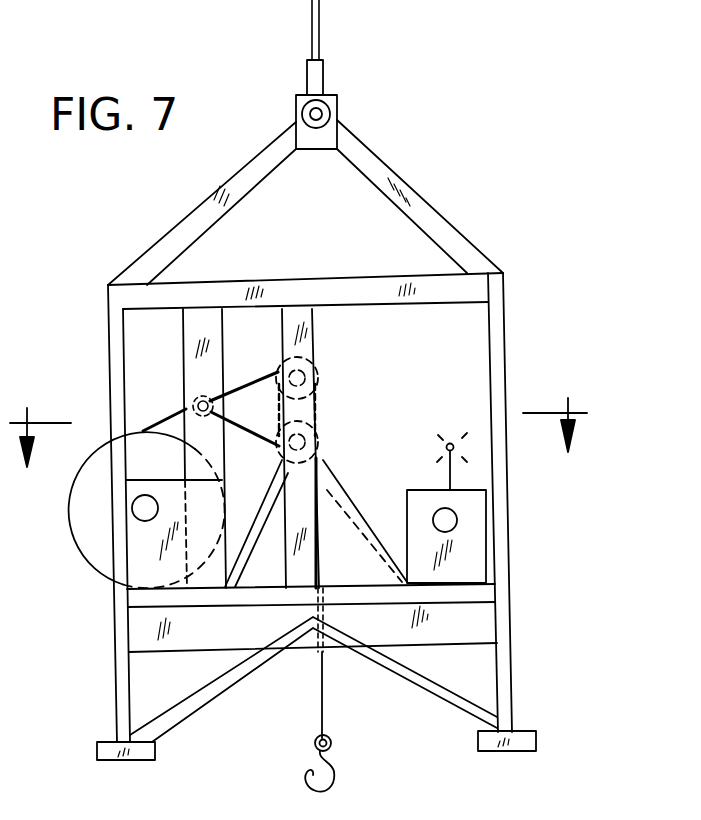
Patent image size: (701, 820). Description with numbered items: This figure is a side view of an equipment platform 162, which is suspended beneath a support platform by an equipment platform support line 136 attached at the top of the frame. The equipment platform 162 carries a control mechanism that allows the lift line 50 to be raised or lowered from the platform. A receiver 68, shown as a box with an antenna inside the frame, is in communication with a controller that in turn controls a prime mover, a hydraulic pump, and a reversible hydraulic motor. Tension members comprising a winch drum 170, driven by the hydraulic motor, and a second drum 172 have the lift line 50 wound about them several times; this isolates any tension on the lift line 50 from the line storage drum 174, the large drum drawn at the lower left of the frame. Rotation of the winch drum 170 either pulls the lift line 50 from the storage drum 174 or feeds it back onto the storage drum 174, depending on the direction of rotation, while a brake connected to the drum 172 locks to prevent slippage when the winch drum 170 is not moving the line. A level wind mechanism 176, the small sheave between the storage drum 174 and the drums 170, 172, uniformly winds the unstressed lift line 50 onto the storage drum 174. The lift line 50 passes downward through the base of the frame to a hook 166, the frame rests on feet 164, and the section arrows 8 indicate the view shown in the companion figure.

The equipment platform support line 136 is at (320, 2).
The equipment platform 162 is at (430, 204).
The level wind mechanism 176 is at (200, 398).
The drum 172 is at (320, 372).
The winch drum 170 is at (322, 440).
The receiver 68 is at (477, 522).
The line storage drum 174 is at (68, 507).
The base foot 164 is at (525, 751).
The lift line 50 is at (318, 685).
The hook 166 is at (340, 775).
The section line 8- 8 is at (297, 427).